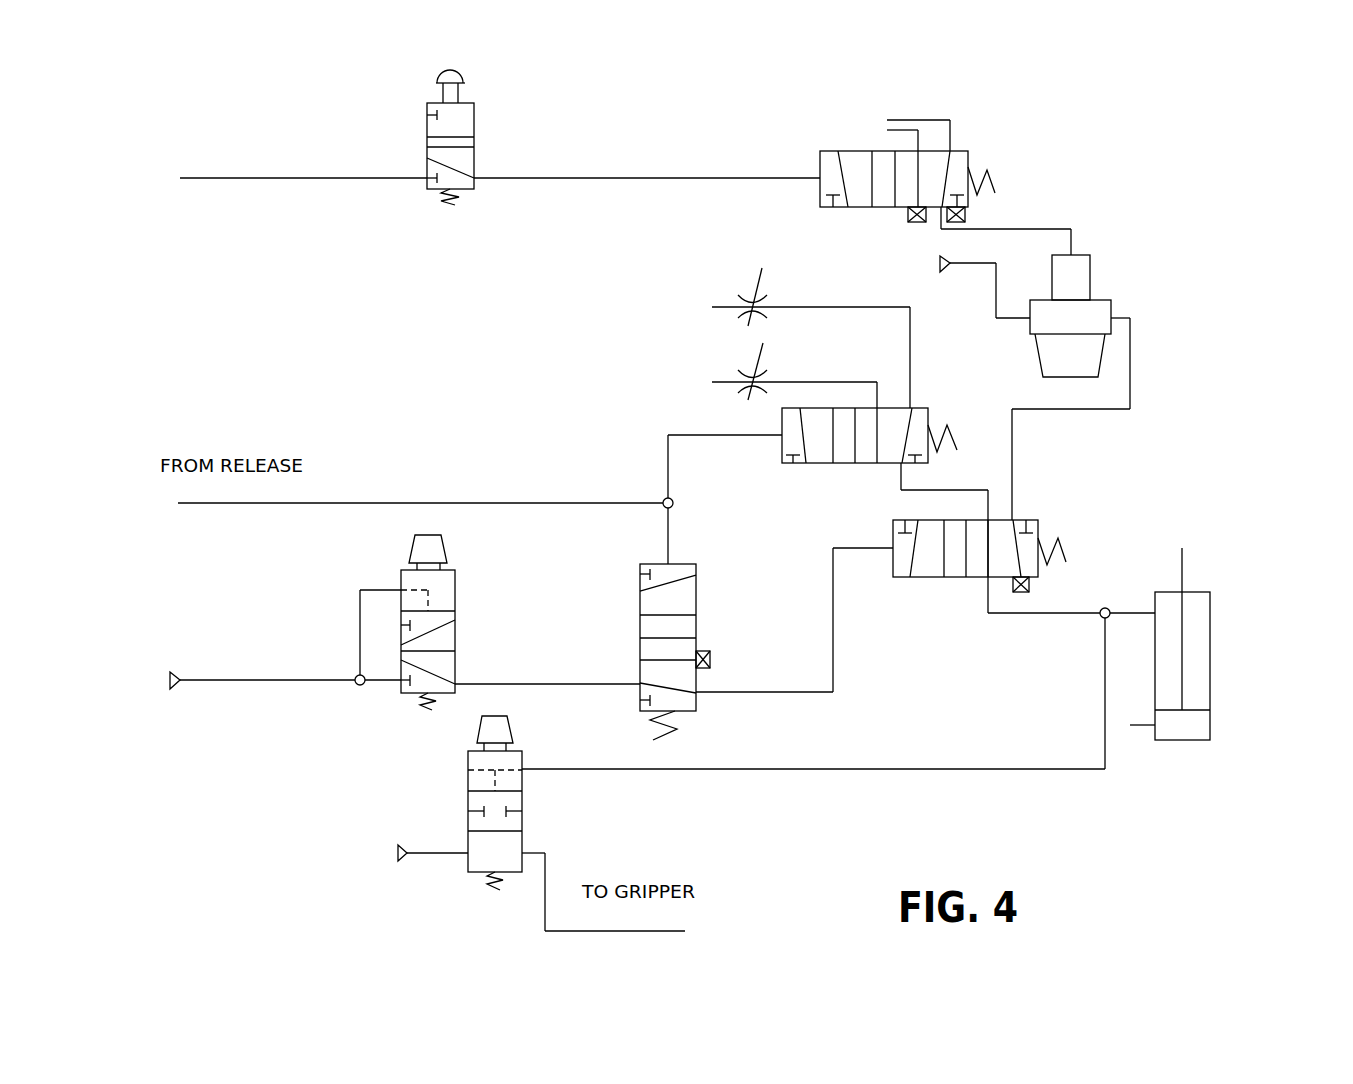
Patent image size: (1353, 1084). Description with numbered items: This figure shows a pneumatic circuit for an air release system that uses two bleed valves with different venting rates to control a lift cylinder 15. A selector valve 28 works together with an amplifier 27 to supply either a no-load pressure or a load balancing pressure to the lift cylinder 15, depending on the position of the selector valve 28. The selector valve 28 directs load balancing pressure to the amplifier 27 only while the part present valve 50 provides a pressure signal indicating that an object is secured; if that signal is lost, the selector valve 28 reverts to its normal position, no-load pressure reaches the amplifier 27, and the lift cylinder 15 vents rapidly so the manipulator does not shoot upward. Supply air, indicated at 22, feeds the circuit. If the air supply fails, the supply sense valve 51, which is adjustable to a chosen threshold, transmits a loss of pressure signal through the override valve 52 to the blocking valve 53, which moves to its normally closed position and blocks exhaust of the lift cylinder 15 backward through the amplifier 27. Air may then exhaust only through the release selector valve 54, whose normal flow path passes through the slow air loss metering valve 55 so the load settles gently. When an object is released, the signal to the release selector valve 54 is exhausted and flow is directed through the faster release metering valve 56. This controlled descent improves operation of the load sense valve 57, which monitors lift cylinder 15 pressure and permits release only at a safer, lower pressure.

The lift cylinder 15 is at (1211, 636).
The air supply 22 is at (940, 262).
The amplifier 27 is at (1105, 300).
The selector valve 28 is at (828, 151).
The part present valve 50 is at (428, 111).
The supply sense valve 51 is at (456, 585).
The override valve 52 is at (697, 574).
The blocking valve 53 is at (1042, 528).
The release selector valve 54 is at (892, 463).
The air loss metering valve 55 is at (740, 300).
The release metering valve 56 is at (740, 375).
The load sense valve 57 is at (468, 762).